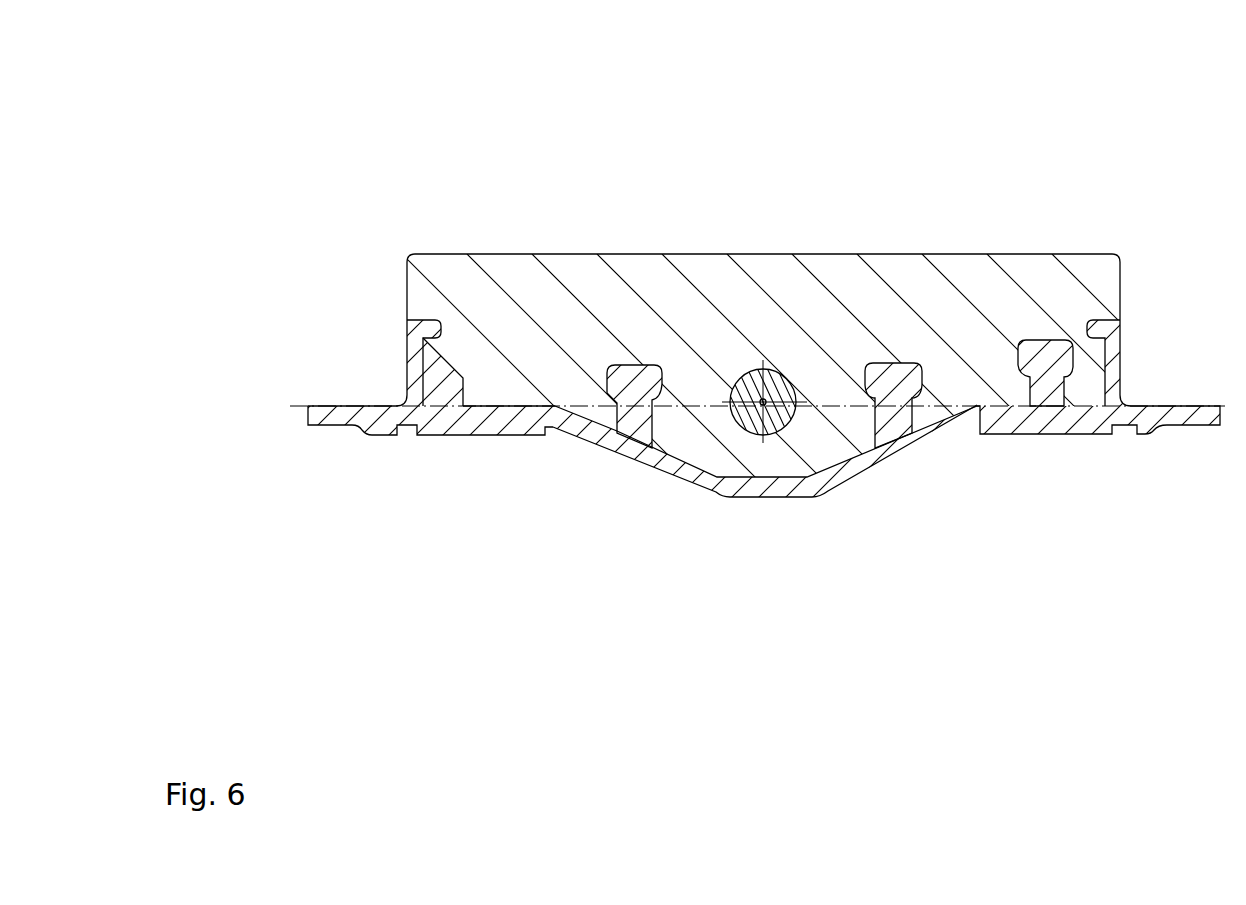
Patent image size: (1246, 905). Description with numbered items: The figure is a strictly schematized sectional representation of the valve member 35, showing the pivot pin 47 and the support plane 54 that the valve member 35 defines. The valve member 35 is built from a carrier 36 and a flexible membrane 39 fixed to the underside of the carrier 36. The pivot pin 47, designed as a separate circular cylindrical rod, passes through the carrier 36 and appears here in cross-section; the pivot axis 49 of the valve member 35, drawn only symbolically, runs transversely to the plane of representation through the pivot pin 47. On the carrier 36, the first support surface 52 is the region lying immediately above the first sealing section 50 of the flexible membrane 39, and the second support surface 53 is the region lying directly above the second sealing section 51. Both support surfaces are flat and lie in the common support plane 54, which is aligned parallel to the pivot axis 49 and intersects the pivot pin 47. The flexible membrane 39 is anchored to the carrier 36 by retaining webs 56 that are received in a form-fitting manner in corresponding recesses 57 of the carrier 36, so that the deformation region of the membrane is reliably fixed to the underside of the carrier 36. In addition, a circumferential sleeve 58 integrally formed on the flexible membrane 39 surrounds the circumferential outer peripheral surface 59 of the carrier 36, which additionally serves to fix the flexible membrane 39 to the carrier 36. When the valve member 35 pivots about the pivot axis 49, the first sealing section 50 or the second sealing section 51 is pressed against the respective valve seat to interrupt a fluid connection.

The valve member 35 is at (1121, 154).
The carrier 36 is at (444, 273).
The flexible membrane 39 is at (842, 480).
The pivot pin 47 is at (785, 381).
The pivot axis 49 is at (748, 378).
The first sealing section 50 is at (517, 432).
The second sealing section 51 is at (993, 434).
The first support surface 52 is at (513, 405).
The second support surface 53 is at (1093, 404).
The support plane 54 is at (697, 407).
The retaining webs 56 is at (627, 373).
The recesses 57 is at (900, 363).
The circumferential sleeve 58 is at (412, 372).
The outer peripheral surface 59 is at (434, 380).